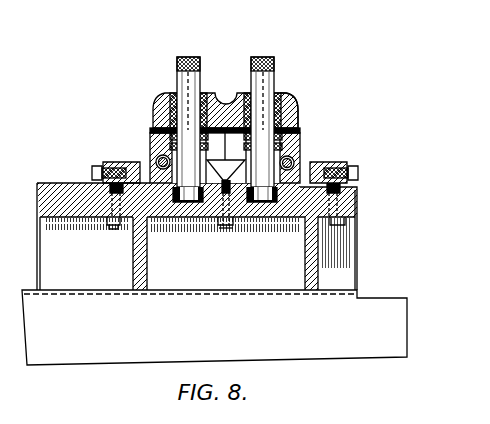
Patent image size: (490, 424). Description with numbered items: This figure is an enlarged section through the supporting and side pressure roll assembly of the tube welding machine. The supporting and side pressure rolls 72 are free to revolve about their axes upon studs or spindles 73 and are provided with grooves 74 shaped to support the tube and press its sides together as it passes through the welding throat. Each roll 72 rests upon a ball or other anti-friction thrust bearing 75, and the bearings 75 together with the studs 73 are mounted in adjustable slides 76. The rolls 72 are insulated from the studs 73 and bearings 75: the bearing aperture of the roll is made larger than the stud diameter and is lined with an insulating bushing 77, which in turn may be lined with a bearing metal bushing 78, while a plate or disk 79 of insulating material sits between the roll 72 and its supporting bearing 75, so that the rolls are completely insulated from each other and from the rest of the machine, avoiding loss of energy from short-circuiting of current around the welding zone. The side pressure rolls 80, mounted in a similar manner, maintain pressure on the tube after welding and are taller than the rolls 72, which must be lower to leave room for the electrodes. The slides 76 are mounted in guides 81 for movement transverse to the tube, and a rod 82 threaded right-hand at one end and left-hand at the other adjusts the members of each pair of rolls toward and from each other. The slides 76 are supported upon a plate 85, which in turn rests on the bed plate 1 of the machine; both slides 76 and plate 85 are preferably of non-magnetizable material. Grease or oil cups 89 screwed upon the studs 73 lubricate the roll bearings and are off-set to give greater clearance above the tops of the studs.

The bed plate 1 is at (393, 327).
The supporting and side pressure rolls 72 is at (170, 110).
The studs 73 is at (180, 77).
The grooves 74 is at (157, 108).
The anti-friction thrust bearings 75 is at (153, 136).
The adjustable slides 76 is at (130, 218).
The insulating bushing 77 is at (162, 100).
The bearing metal bushing 78 is at (205, 105).
The insulating plate or disk 79 is at (153, 132).
The side pressure rolls 80 is at (292, 95).
The guides 81 is at (110, 165).
The rod 82 is at (117, 160).
The plate 85 is at (347, 259).
The grease or oil cups 89 is at (198, 100).